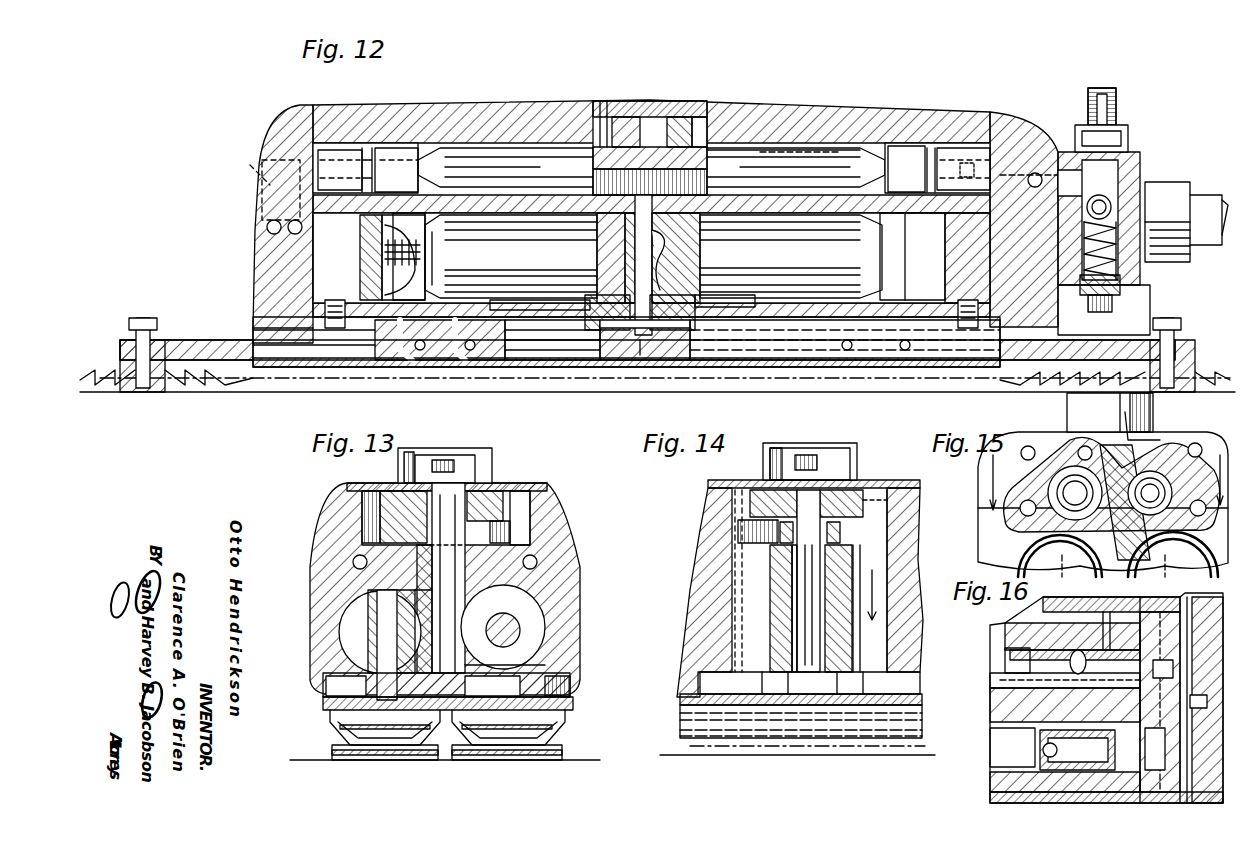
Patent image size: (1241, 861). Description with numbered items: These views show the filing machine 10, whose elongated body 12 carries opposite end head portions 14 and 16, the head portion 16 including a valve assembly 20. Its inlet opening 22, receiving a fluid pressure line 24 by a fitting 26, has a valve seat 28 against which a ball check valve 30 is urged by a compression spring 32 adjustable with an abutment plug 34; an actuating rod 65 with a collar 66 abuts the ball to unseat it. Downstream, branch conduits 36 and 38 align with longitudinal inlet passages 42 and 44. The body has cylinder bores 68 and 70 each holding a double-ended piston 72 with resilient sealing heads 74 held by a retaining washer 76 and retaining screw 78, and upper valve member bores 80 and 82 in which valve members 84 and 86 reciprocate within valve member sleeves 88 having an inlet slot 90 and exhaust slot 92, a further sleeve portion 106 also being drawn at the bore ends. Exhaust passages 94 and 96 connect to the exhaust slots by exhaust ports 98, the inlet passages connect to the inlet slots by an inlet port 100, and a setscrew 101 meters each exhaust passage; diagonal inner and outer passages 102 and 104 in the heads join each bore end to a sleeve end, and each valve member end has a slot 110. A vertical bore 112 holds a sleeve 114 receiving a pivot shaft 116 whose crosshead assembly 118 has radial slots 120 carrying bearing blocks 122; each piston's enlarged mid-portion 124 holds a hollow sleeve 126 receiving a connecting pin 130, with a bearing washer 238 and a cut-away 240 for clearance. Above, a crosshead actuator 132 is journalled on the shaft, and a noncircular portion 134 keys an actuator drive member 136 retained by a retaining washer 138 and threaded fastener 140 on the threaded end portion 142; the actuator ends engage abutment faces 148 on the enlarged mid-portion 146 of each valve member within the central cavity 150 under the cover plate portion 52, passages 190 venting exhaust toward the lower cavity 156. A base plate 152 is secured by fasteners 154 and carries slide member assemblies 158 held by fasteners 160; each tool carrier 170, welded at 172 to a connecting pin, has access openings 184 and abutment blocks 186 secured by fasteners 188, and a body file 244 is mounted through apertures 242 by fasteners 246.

In FIG. 12, the filing machine 10 is at (384, 97).
In FIG. 12, the elongated body 12 is at (936, 88).
In FIG. 12, the head portion 14 is at (283, 113).
In FIG. 12, the head portion 16 is at (1022, 112).
In FIG. 15, the head portion 16 is at (1220, 578).
In FIG. 16, the head portion 16 is at (1205, 597).
In FIG. 12, the valve assembly 20 is at (1139, 131).
In FIG. 12, the inlet opening 22 is at (1122, 250).
In FIG. 12, the fluid pressure line 24 is at (1208, 194).
In FIG. 12, the fitting 26 is at (1175, 182).
In FIG. 12, the valve seat 28 is at (1115, 195).
In FIG. 12, the ball check valve 30 is at (1075, 183).
In FIG. 12, the compression spring 32 is at (1122, 288).
In FIG. 12, the abutment plug 34 is at (1112, 303).
In FIG. 16, the branch conduit 36 is at (1188, 750).
In FIG. 12, the branch conduit 38 is at (1036, 172).
In FIG. 16, the branch conduit 38 is at (1203, 619).
In FIG. 15, the fluid inlet passage 42 is at (1032, 495).
In FIG. 16, the fluid inlet passage 42 is at (990, 800).
In FIG. 13, the fluid inlet passage 44 is at (358, 556).
In FIG. 14, the fluid inlet passage 44 is at (797, 556).
In FIG. 15, the fluid inlet passage 44 is at (1198, 525).
In FIG. 12, the cover plate portion 52 is at (596, 103).
In FIG. 14, the cover plate portion 52 is at (870, 444).
In FIG. 15, the cover plate portion 52 is at (1167, 415).
In FIG. 12, the actuating rod 65 is at (1116, 100).
In FIG. 12, the collar 66 is at (1085, 128).
In FIG. 12, the cylinder bore 68 is at (360, 208).
In FIG. 13, the cylinder bore 68 is at (548, 612).
In FIG. 13, the cylinder bore 70 is at (340, 640).
In FIG. 12, the double-ended piston 72 is at (511, 252).
In FIG. 13, the double-ended piston 72 is at (522, 630).
In FIG. 12, the fluid pressure sealing head 74 is at (955, 273).
In FIG. 12, the retaining washer 76 is at (360, 246).
In FIG. 12, the retaining screw 78 is at (360, 264).
In FIG. 12, the upper valve member bore 80 is at (840, 150).
In FIG. 16, the upper valve member bore 80 is at (1005, 636).
In FIG. 16, the upper valve member bore 82 is at (995, 705).
In FIG. 12, the valve member 84 is at (805, 150).
In FIG. 16, the valve member 84 is at (1005, 656).
In FIG. 16, the valve member 86 is at (990, 748).
In FIG. 12, the valve member sleeve 88 is at (950, 148).
In FIG. 16, the valve member sleeve 88 is at (1040, 632).
In FIG. 12, the inlet slot 90 is at (330, 150).
In FIG. 12, the exhaust slot 92 is at (368, 150).
In FIG. 16, the exhaust slot 92 is at (1106, 612).
In FIG. 15, the exhaust passage 94 is at (1190, 445).
In FIG. 16, the exhaust passage 94 is at (1070, 598).
In FIG. 14, the exhaust passage 96 is at (920, 512).
In FIG. 15, the exhaust passage 96 is at (1085, 445).
In FIG. 15, the exhaust port 98 is at (1205, 428).
In FIG. 16, the exhaust port 98 is at (1128, 612).
In FIG. 15, the inlet port 100 is at (1035, 525).
In FIG. 15, the setscrew 101 is at (1136, 418).
In FIG. 12, the inner diagonal passage 102 is at (266, 140).
In FIG. 16, the inner diagonal passage 102 is at (1165, 748).
In FIG. 12, the outer diagonal passage 104 is at (252, 167).
In FIG. 16, the outer diagonal passage 104 is at (1173, 669).
In FIG. 12, the sleeve 106 is at (430, 150).
In FIG. 16, the slot 110 is at (1040, 750).
In FIG. 13, the vertically extending bore 112 is at (555, 575).
In FIG. 12, the sleeve 114 is at (640, 117).
In FIG. 13, the sleeve 114 is at (425, 580).
In FIG. 14, the sleeve 114 is at (780, 600).
In FIG. 13, the pivot shaft 116 is at (440, 578).
In FIG. 12, the crosshead assembly 118 is at (707, 312).
In FIG. 13, the crosshead assembly 118 is at (548, 682).
In FIG. 14, the crosshead assembly 118 is at (752, 689).
In FIG. 12, the radial slot 120 is at (503, 268).
In FIG. 14, the radial slot 120 is at (790, 672).
In FIG. 12, the bearing block 122 is at (588, 296).
In FIG. 13, the bearing block 122 is at (325, 686).
In FIG. 14, the bearing block 122 is at (808, 670).
In FIG. 12, the diametrically enlarged mid-portion 124 is at (700, 287).
In FIG. 13, the diametrically enlarged mid-portion 124 is at (368, 600).
In FIG. 12, the hollow sleeve 126 is at (705, 228).
In FIG. 12, the connecting pin 130 is at (521, 223).
In FIG. 13, the connecting pin 130 is at (380, 626).
In FIG. 12, the crosshead actuator 132 is at (505, 167).
In FIG. 13, the crosshead actuator 132 is at (540, 520).
In FIG. 14, the crosshead actuator 132 is at (841, 529).
In FIG. 13, the noncircular portion 134 is at (500, 495).
In FIG. 14, the noncircular portion 134 is at (860, 490).
In FIG. 13, the actuator drive member 136 is at (520, 498).
In FIG. 14, the actuator drive member 136 is at (745, 490).
In FIG. 13, the retaining washer 138 is at (468, 485).
In FIG. 14, the retaining washer 138 is at (770, 490).
In FIG. 13, the threaded fastener 140 is at (470, 462).
In FIG. 14, the threaded fastener 140 is at (790, 450).
In FIG. 13, the externally threaded terminal upper end portion 142 is at (450, 458).
In FIG. 14, the externally threaded terminal upper end portion 142 is at (822, 450).
In FIG. 12, the diametrically enlarged mid-portion 146 is at (796, 167).
In FIG. 12, the abutment face 148 is at (680, 117).
In FIG. 14, the central cavity 150 is at (900, 490).
In FIG. 12, the base plate 152 is at (239, 328).
In FIG. 13, the base plate 152 is at (308, 712).
In FIG. 14, the base plate 152 is at (680, 702).
In FIG. 12, the fastener 154 is at (335, 300).
In FIG. 12, the lower cavity 156 is at (545, 305).
In FIG. 12, the slide member assembly 158 is at (775, 355).
In FIG. 12, the fastener 160 is at (510, 362).
In FIG. 12, the tool carrier 170 is at (644, 372).
In FIG. 13, the tool carrier 170 is at (315, 732).
In FIG. 14, the tool carrier 170 is at (680, 730).
In FIG. 12, the welding 172 is at (627, 353).
In FIG. 12, the access opening 184 is at (478, 362).
In FIG. 12, the abutment block 186 is at (185, 340).
In FIG. 12, the fastener 188 is at (228, 378).
In FIG. 14, the passage 190 is at (738, 590).
In FIG. 12, the bearing washer 238 is at (600, 300).
In FIG. 12, the cut away portion 240 is at (708, 262).
In FIG. 12, the aperture 242 is at (125, 340).
In FIG. 12, the body file 244 is at (1205, 365).
In FIG. 13, the body file 244 is at (330, 752).
In FIG. 12, the fastener 246 is at (142, 318).